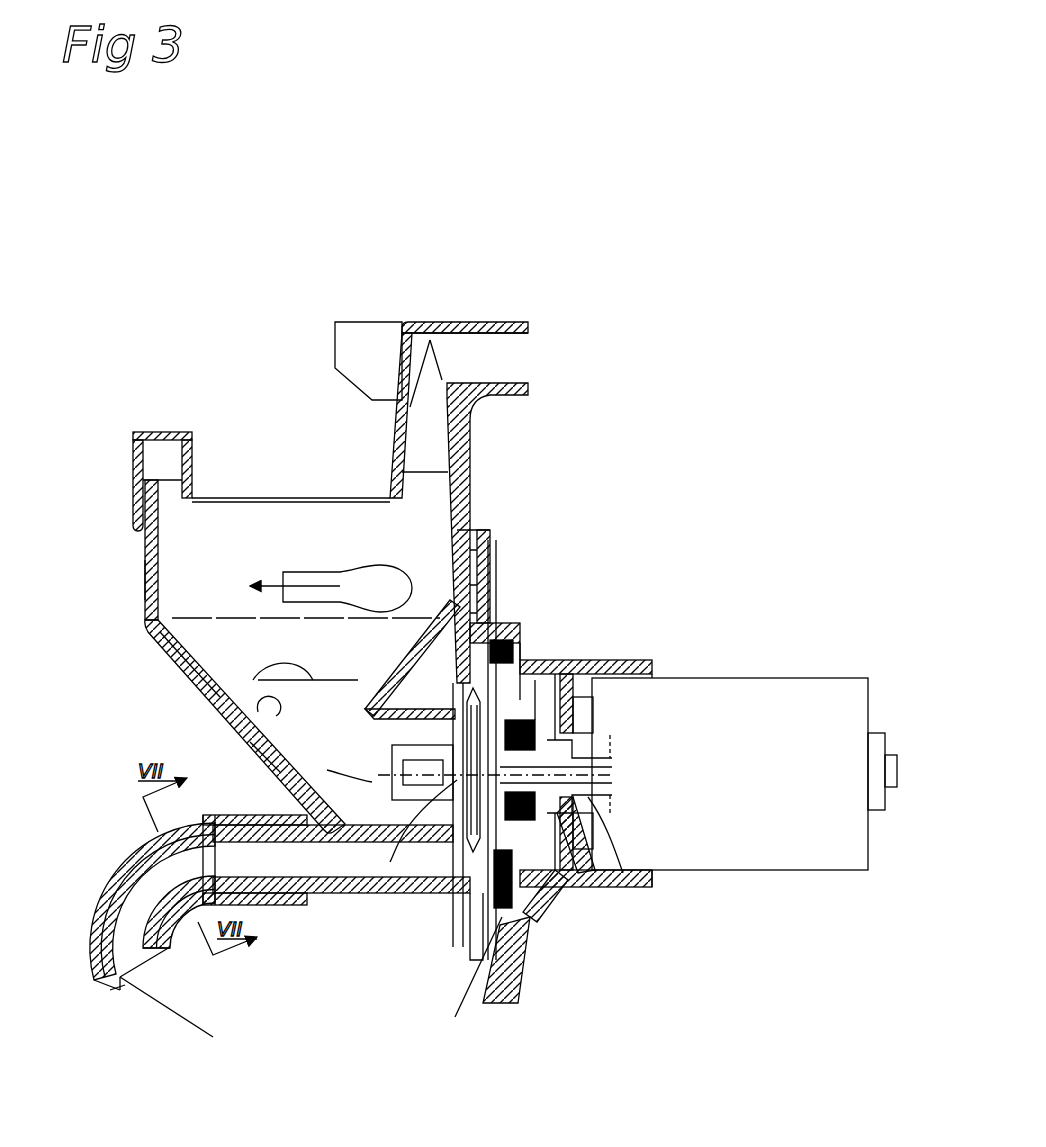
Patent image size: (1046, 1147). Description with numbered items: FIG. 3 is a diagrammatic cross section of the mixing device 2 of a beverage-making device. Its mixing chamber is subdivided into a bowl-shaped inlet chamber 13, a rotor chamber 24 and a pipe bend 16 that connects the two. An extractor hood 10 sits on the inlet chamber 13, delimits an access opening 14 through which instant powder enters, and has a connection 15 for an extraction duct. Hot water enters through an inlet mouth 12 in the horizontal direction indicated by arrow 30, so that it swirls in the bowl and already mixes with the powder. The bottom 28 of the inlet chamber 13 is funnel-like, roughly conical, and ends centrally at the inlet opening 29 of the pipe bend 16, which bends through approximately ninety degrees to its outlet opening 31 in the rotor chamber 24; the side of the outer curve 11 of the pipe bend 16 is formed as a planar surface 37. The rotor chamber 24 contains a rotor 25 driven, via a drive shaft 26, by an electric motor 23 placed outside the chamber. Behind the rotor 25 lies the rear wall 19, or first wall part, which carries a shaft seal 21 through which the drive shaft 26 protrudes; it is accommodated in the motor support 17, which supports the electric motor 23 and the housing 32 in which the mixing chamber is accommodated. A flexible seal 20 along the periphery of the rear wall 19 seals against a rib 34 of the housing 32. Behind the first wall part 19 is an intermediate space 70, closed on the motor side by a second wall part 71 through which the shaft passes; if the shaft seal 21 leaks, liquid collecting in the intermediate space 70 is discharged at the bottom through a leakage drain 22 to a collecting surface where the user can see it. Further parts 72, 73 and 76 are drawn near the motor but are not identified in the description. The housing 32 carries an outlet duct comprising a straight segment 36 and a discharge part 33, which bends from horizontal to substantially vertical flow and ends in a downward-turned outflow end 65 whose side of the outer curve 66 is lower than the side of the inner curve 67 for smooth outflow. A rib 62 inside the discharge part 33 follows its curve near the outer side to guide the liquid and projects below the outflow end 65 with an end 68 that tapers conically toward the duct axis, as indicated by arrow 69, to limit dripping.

The mixing device 2 is at (615, 556).
The extractor hood 10 is at (377, 340).
The outer curve 11 is at (260, 752).
The inlet mouth 12 is at (382, 588).
The inlet chamber 13 is at (250, 642).
The access opening 14 is at (208, 452).
The connection 15 is at (498, 355).
The pipe bend 16 is at (292, 764).
The motor support 17 is at (600, 655).
The rear wall 19 is at (547, 695).
The flexible seal 20 is at (508, 640).
The shaft seal 21 is at (608, 660).
The leakage drain 22 is at (528, 890).
The electric motor 23 is at (680, 817).
The rotor chamber 24 is at (447, 873).
The rotor 25 is at (457, 813).
The drive shaft 26 is at (582, 767).
The bottom 28 is at (185, 665).
The inlet opening 29 is at (205, 695).
The arrow 30 is at (277, 585).
The outlet opening 31 is at (312, 786).
The housing 32 is at (147, 577).
The discharge part 33 is at (87, 914).
The rib 34 is at (457, 877).
The straight segment 36 is at (338, 862).
The planar surface 37 is at (245, 716).
The rib 62 is at (96, 975).
The outflow end 65 is at (160, 975).
The side of the outer curve 66 is at (103, 993).
The side of the inner curve 67 is at (143, 953).
The end 68 is at (113, 992).
The arrow 69 is at (168, 1015).
The intermediate space 70 is at (547, 693).
The second wall part 71 is at (575, 877).
The flange 72 is at (653, 873).
The coupling 73 is at (582, 780).
The housing wall 76 is at (623, 873).